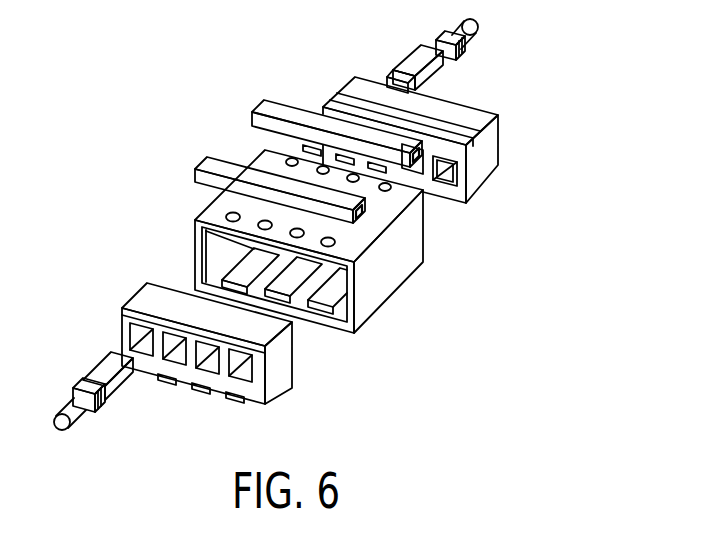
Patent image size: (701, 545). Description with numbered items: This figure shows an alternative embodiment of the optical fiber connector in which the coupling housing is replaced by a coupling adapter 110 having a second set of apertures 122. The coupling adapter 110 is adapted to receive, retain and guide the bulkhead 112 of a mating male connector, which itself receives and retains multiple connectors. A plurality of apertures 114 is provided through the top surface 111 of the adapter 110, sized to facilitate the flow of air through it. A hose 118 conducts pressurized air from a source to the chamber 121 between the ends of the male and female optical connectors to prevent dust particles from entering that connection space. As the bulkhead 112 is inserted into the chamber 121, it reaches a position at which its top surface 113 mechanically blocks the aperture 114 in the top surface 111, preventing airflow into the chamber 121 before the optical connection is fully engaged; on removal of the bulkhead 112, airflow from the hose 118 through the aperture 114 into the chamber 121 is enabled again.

The housing 110 is at (208, 212).
The top surface 111 is at (248, 209).
The bulkhead 112 is at (104, 331).
The top surface 113 is at (160, 308).
The apertures 114 is at (310, 234).
The hose 118 is at (364, 203).
The chamber 121 is at (327, 302).
The second set of apertures 122 is at (405, 186).